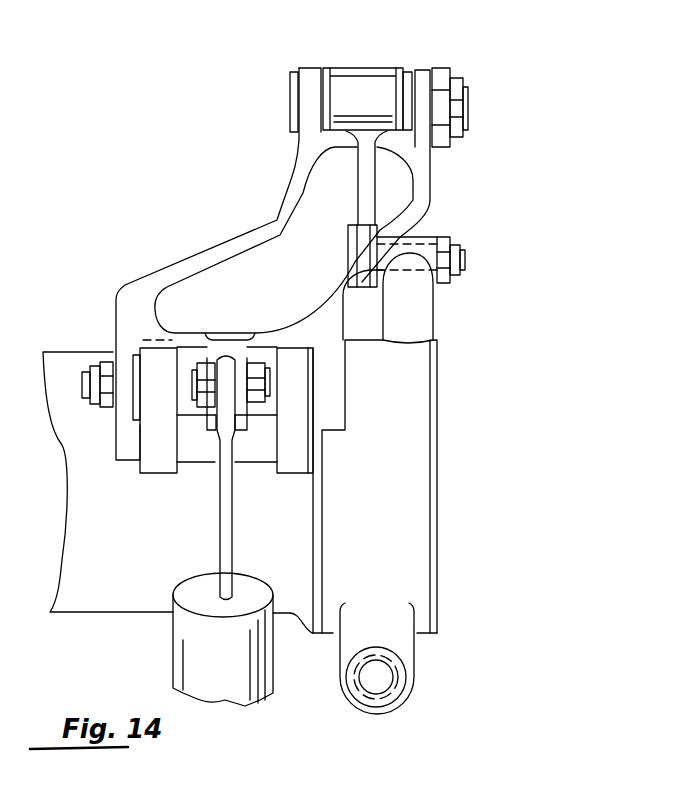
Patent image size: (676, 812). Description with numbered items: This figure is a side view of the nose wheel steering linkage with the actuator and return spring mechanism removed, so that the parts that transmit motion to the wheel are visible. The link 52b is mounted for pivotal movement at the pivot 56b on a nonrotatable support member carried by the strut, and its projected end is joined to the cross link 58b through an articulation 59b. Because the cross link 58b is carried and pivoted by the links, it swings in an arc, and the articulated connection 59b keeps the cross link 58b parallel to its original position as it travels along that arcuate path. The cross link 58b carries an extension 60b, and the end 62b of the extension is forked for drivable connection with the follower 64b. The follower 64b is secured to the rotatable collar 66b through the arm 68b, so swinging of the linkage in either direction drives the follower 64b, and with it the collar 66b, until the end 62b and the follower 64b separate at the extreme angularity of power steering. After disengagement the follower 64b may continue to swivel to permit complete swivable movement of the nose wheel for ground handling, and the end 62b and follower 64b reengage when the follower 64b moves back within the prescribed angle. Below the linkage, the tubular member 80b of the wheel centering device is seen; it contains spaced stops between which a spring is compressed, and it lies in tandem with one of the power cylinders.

The link 52b is at (422, 167).
The pivot 56b is at (165, 357).
The cross link 58b is at (375, 82).
The articulation 59b is at (442, 113).
The extension 60b is at (367, 197).
The forked end 62b is at (347, 247).
The follower 64b is at (367, 282).
The rotatable collar 66b is at (418, 547).
The arm 68b is at (418, 318).
The tubular member 80b is at (193, 630).